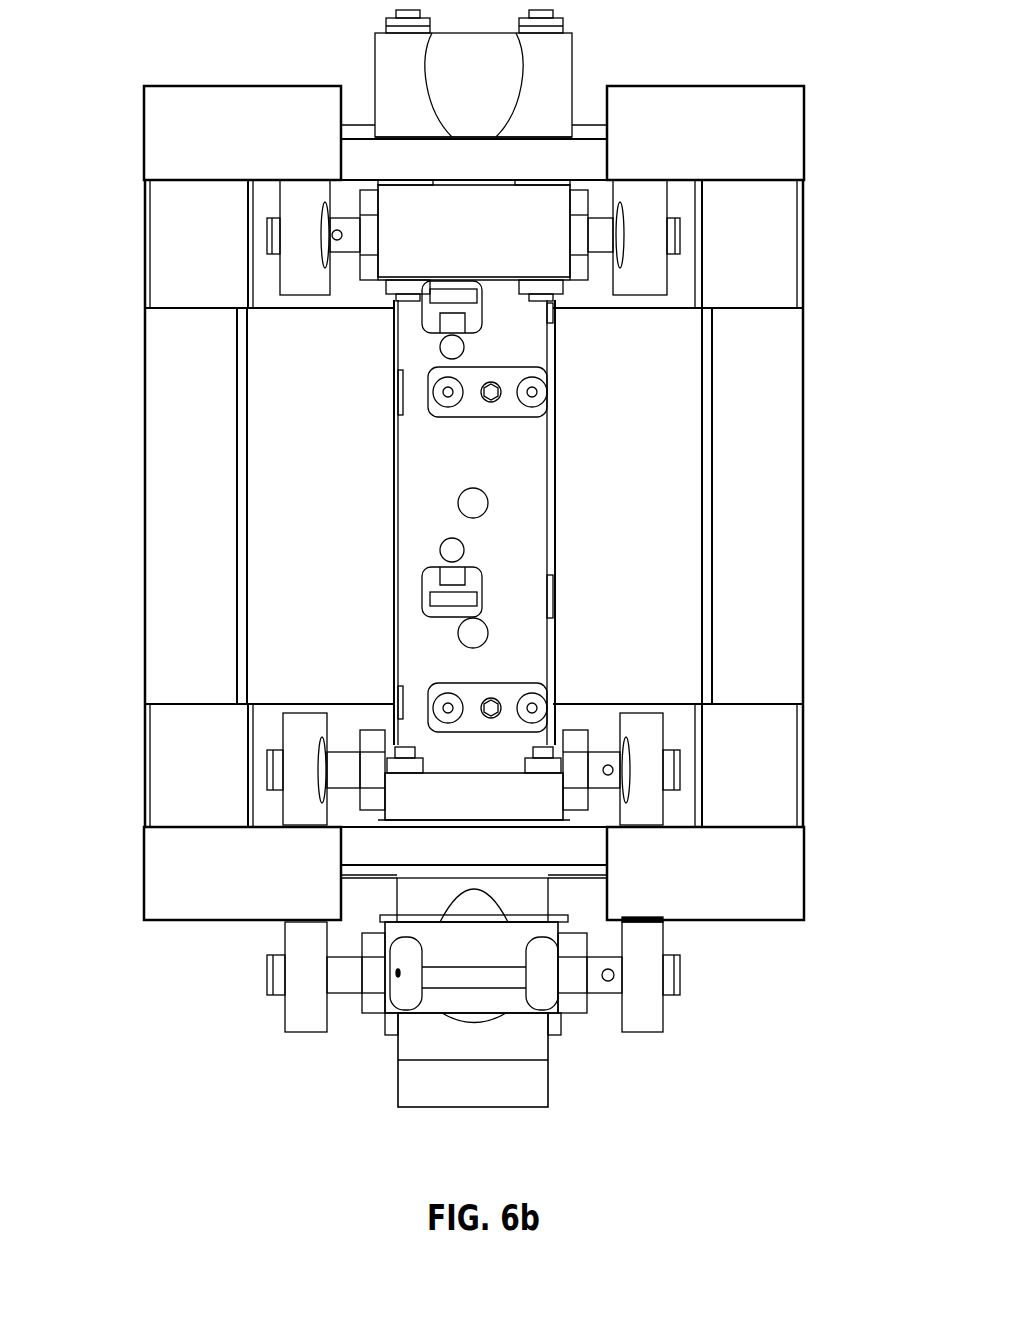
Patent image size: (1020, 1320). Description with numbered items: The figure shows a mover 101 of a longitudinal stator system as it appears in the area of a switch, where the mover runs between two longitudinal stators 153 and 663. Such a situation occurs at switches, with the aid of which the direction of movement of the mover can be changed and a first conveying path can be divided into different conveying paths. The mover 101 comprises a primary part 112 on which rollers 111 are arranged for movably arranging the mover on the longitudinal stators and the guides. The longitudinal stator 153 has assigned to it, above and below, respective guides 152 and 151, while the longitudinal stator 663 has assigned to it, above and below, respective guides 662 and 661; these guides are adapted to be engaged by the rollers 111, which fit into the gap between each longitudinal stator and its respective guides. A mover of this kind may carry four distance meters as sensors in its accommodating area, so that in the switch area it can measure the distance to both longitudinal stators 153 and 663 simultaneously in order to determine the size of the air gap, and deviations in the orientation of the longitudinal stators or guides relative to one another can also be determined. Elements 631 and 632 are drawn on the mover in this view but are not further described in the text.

The mover 101 is at (473, 579).
The rollers 111 is at (655, 1013).
The primary part 112 is at (413, 1047).
The guide rail 151 is at (170, 860).
The guide rail 152 is at (155, 136).
The longitudinal stator 153 is at (148, 640).
The right guide tab 631 is at (563, 320).
The left guide tab 632 is at (385, 697).
The guide 661 is at (775, 860).
The guide 662 is at (790, 136).
The longitudinal stator 663 is at (798, 640).